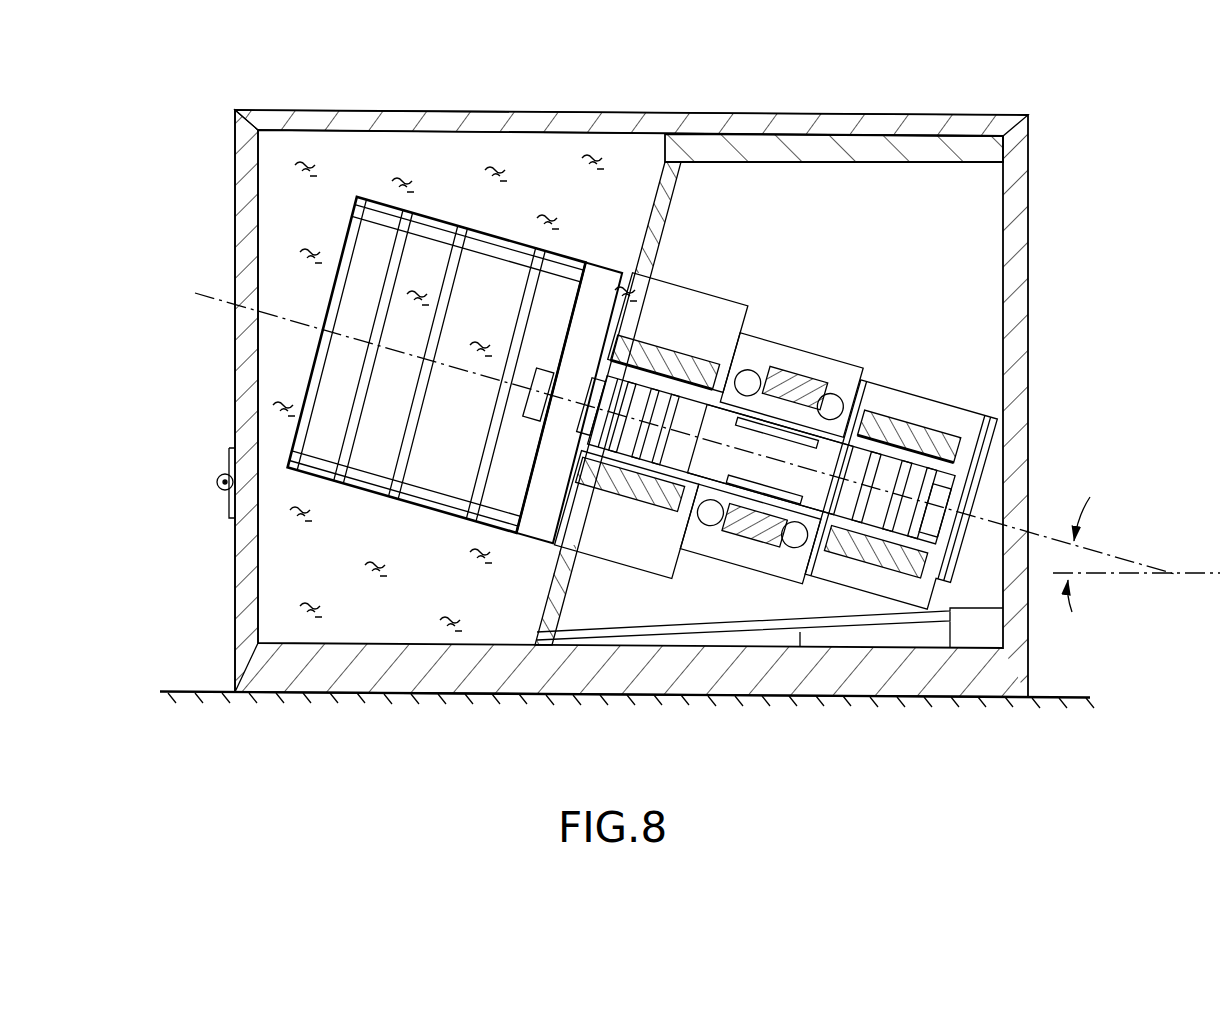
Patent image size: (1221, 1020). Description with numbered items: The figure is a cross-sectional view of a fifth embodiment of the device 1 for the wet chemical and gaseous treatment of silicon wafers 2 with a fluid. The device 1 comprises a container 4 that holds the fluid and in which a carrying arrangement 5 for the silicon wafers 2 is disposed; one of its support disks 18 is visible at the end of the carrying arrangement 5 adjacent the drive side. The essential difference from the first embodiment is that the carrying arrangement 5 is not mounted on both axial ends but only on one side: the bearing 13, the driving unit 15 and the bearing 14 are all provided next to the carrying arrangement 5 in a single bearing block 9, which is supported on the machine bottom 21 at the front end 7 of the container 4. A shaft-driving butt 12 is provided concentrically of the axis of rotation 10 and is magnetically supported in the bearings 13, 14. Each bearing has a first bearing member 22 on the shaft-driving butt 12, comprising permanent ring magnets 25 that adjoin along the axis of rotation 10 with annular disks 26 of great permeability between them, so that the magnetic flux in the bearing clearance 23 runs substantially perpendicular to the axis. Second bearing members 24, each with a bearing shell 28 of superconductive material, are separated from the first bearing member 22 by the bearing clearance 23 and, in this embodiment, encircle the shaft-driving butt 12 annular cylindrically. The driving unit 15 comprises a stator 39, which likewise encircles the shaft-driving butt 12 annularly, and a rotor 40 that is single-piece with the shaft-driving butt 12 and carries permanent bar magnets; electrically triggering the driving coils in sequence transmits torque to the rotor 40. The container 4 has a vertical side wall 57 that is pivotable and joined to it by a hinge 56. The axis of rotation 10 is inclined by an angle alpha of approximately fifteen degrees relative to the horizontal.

The device 1 is at (1068, 182).
The silicon wafers 2 is at (402, 440).
The container 4 is at (314, 110).
The carrying arrangement 5 is at (433, 204).
The front end 7 is at (553, 590).
The bearing block 9 is at (745, 648).
The axis of rotation 10 is at (1125, 558).
The shaft-driving butt 12 is at (600, 388).
The bearing 13 is at (668, 338).
The bearing 14 is at (906, 413).
The driving unit 15 is at (807, 367).
The support disk 18 is at (597, 292).
The machine bottom 21 is at (330, 690).
The first bearing member 22 is at (642, 397).
The bearing clearance 23 is at (670, 388).
The second bearing member 24 is at (606, 474).
The permanent ring magnets 25 is at (600, 394).
The annular disks 26 is at (620, 428).
The bearing shell 28 is at (650, 488).
The stator 39 is at (784, 374).
The rotor 40 is at (760, 478).
The hinge 56 is at (217, 483).
The vertical side wall 57 is at (245, 240).